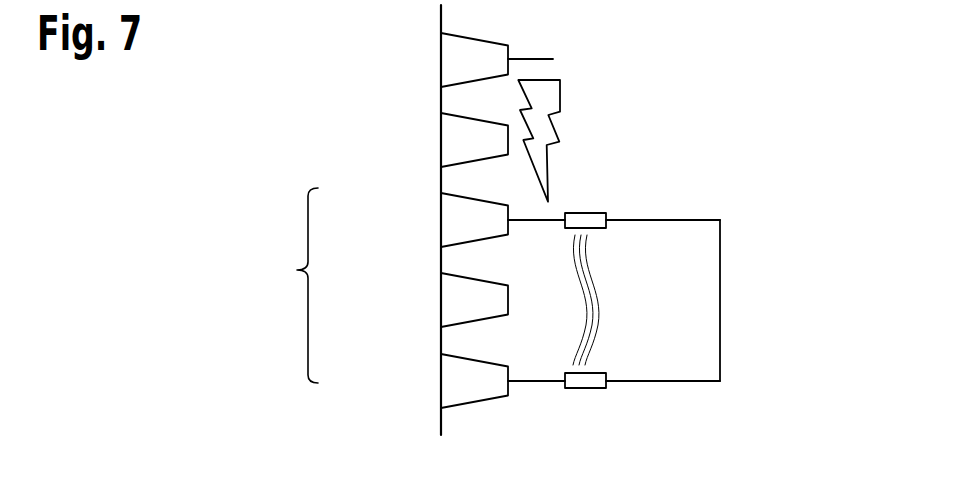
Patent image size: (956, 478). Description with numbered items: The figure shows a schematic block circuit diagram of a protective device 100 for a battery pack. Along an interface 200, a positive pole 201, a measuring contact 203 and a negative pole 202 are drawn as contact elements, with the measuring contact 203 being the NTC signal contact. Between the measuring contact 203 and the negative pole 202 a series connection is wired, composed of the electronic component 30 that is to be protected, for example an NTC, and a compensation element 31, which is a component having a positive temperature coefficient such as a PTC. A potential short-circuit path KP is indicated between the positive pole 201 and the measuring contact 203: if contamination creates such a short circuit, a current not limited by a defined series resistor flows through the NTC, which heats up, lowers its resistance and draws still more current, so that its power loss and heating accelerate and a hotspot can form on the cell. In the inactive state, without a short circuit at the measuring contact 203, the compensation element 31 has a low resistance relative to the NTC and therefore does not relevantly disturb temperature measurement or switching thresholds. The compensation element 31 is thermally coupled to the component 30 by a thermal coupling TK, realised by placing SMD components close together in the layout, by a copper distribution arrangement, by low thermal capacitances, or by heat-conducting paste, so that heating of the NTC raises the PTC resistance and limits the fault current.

The protective device 100 is at (746, 33).
The interface 200 is at (282, 285).
The positive pole 201 is at (441, 52).
The negative pole 202 is at (441, 375).
The measuring contact 203 is at (441, 213).
The electronic component 30 is at (589, 212).
The compensation element 31 is at (592, 373).
The short-circuit path KP is at (560, 103).
The thermal coupling TK is at (583, 268).